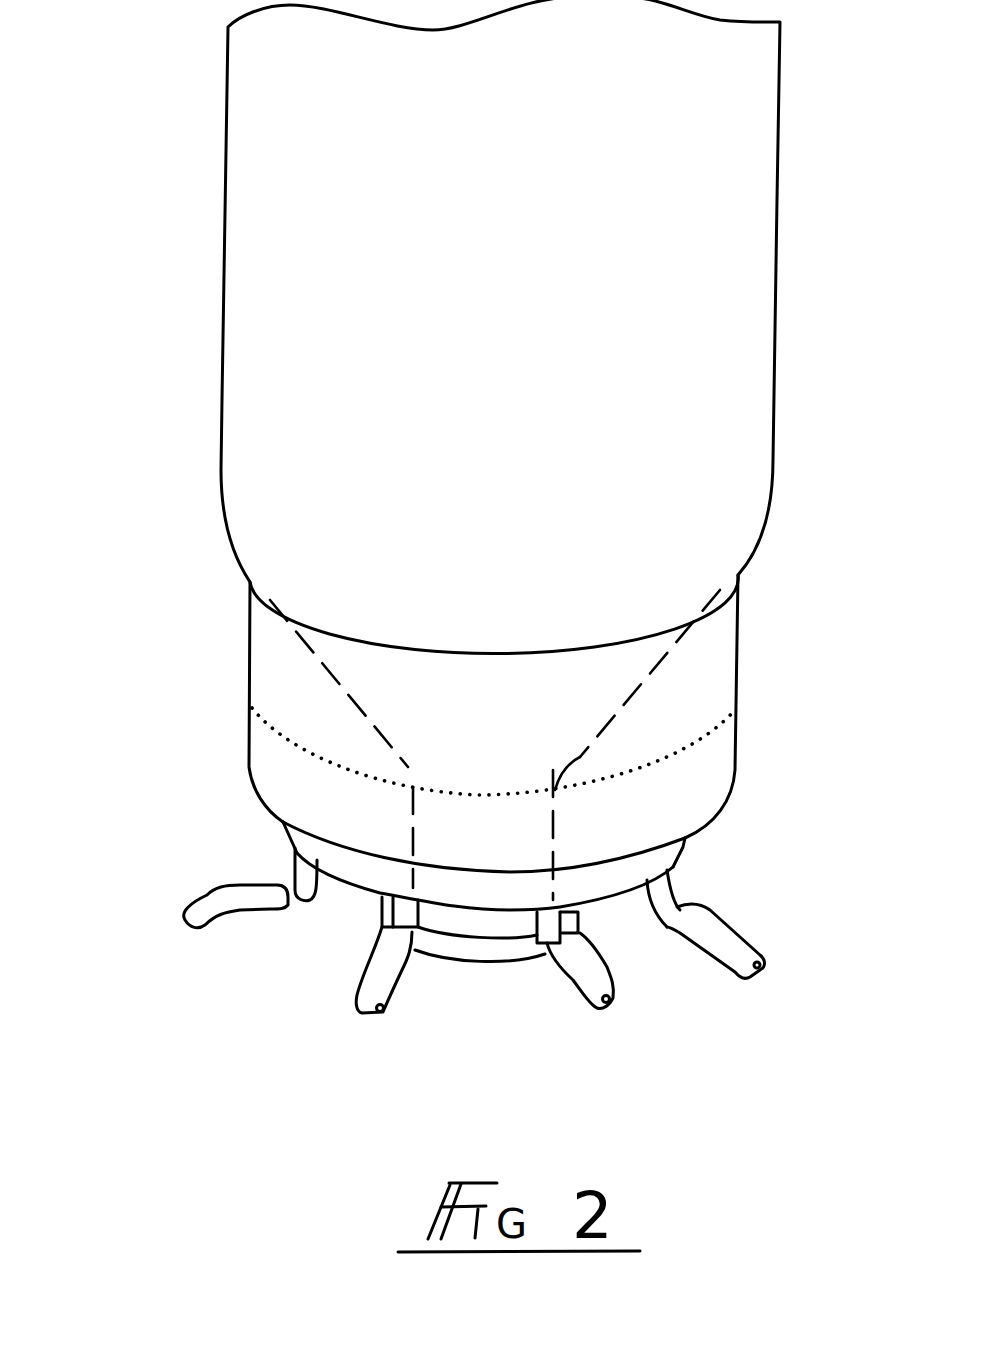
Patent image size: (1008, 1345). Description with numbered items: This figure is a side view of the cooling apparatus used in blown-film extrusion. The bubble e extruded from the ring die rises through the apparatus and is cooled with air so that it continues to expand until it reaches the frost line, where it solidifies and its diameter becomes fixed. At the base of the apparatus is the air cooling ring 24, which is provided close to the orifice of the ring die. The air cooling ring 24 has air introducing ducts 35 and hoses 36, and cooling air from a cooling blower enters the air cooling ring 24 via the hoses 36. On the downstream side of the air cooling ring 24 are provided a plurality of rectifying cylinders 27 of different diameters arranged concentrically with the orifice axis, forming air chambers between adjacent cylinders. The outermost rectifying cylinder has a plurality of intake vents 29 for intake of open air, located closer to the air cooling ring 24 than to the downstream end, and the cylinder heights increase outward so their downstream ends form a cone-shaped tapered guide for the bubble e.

The bubble e is at (777, 215).
The air cooling ring 24 is at (237, 752).
The rectifying cylinder 27 is at (725, 662).
The intake vent 29 is at (703, 737).
The air introducing duct 35 is at (293, 870).
The hose 36 is at (183, 908).